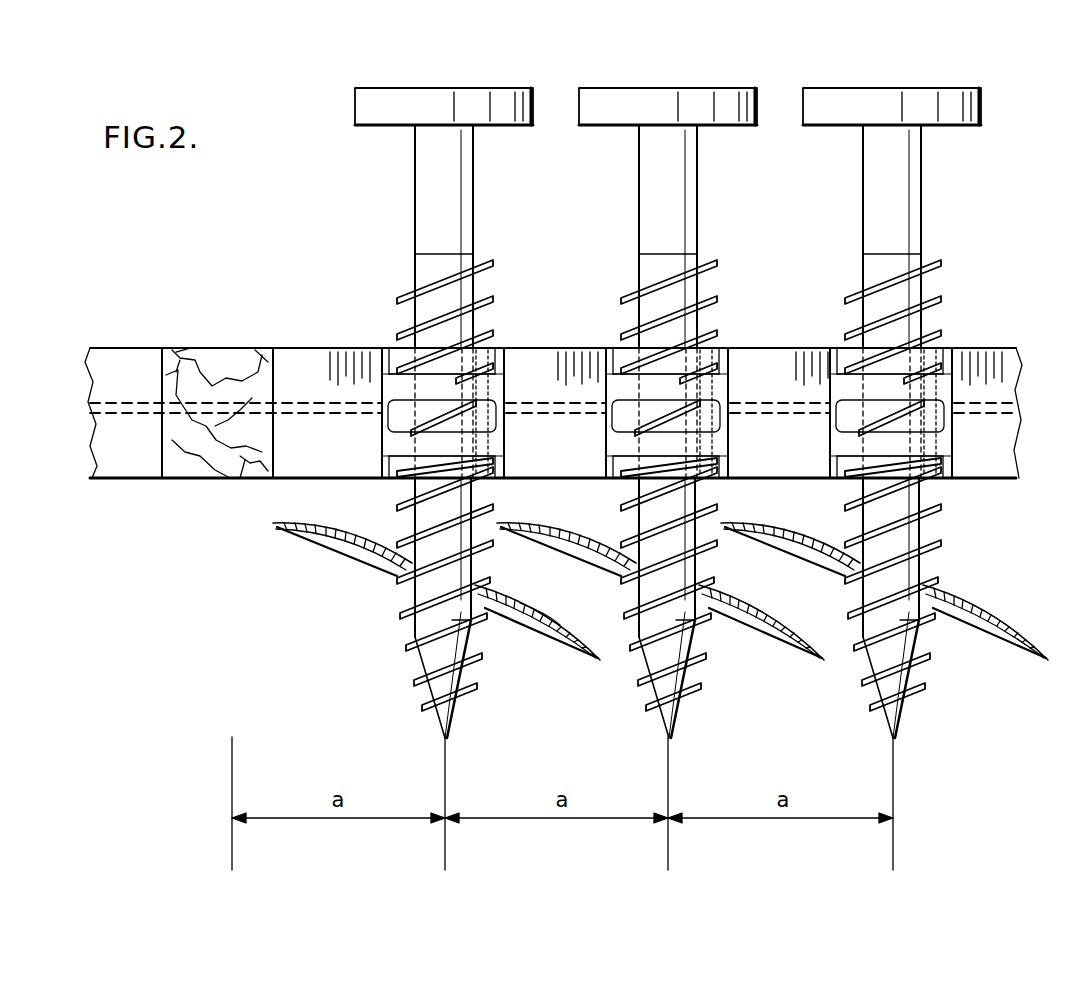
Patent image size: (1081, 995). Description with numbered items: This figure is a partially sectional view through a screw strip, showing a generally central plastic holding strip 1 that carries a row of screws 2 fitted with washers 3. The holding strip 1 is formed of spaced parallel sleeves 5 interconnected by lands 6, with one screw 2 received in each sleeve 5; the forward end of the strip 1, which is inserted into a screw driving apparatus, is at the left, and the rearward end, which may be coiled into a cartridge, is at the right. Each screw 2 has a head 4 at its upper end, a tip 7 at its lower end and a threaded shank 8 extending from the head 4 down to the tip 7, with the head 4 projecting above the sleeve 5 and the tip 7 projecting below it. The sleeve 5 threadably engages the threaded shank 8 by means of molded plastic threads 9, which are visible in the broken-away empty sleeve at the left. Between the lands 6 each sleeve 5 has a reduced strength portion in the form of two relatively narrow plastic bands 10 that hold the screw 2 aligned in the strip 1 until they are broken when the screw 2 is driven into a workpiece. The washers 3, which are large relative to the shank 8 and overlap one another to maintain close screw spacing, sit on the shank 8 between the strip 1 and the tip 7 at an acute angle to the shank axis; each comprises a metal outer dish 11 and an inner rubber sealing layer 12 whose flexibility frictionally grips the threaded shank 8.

The plastic holding strip 1 is at (330, 348).
The screw 2 is at (483, 262).
The washer 3 is at (598, 662).
The head 4 is at (465, 88).
The sleeve 5 is at (218, 348).
The land 6 is at (110, 460).
The tip 7 is at (448, 740).
The threaded shank 8 is at (493, 502).
The molded plastic threads 9 is at (188, 470).
The plastic bands 10 is at (498, 385).
The metal outer dish 11 is at (552, 610).
The rubber sealing layer 12 is at (540, 627).